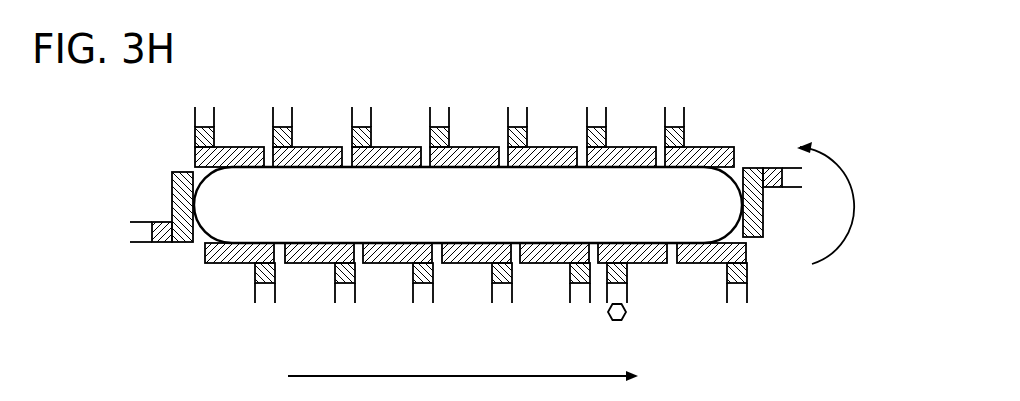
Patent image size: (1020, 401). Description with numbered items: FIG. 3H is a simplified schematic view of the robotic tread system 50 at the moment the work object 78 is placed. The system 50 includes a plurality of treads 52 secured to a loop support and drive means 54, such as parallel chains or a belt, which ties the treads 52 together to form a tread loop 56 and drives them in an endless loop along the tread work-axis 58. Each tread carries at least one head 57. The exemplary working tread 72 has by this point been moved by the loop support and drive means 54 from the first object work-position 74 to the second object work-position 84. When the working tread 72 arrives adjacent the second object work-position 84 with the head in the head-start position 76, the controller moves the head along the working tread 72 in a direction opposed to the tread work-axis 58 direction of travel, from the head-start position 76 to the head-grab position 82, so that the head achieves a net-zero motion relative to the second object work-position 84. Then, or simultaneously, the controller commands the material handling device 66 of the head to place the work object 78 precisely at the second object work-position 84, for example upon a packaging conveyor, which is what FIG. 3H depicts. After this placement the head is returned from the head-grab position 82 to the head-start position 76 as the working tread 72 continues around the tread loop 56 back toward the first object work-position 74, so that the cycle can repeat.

The robotic tread system 50 is at (722, 74).
The treads 52 is at (465, 147).
The loop support and drive means 54 is at (209, 175).
The tread loop 56 is at (462, 192).
The head 57 is at (585, 147).
The tread work-axis 58 is at (457, 376).
The material handling device 66 is at (628, 292).
The working tread 72 is at (660, 264).
The first object work-position 74 is at (264, 238).
The head-start position 76 is at (667, 242).
The work object 78 is at (608, 318).
The head-grab position 82 is at (600, 242).
The second object work-position 84 is at (616, 236).